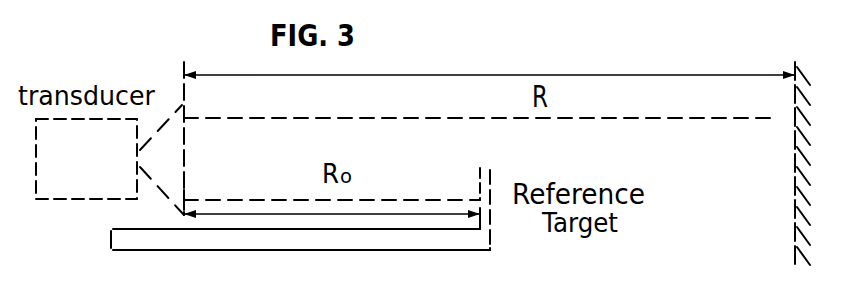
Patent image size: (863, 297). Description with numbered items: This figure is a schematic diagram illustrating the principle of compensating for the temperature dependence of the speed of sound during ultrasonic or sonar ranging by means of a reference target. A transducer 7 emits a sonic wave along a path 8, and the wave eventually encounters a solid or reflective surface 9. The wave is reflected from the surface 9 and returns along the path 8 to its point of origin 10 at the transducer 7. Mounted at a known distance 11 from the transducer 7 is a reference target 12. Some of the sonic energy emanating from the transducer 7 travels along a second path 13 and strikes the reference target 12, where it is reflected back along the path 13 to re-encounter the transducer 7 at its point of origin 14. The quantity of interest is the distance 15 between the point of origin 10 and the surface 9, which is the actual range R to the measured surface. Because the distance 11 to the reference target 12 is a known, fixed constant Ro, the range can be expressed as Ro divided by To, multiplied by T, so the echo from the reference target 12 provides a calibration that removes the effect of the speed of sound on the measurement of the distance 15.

The transducer 7 is at (46, 200).
The path 8 is at (272, 118).
The solid or reflective surface 9 is at (797, 66).
The point of origin 10 is at (186, 118).
The known distance 11 is at (387, 213).
The reference target 12 is at (492, 185).
The path 13 is at (238, 200).
The point of origin 14 is at (191, 196).
The distance 15 is at (425, 76).